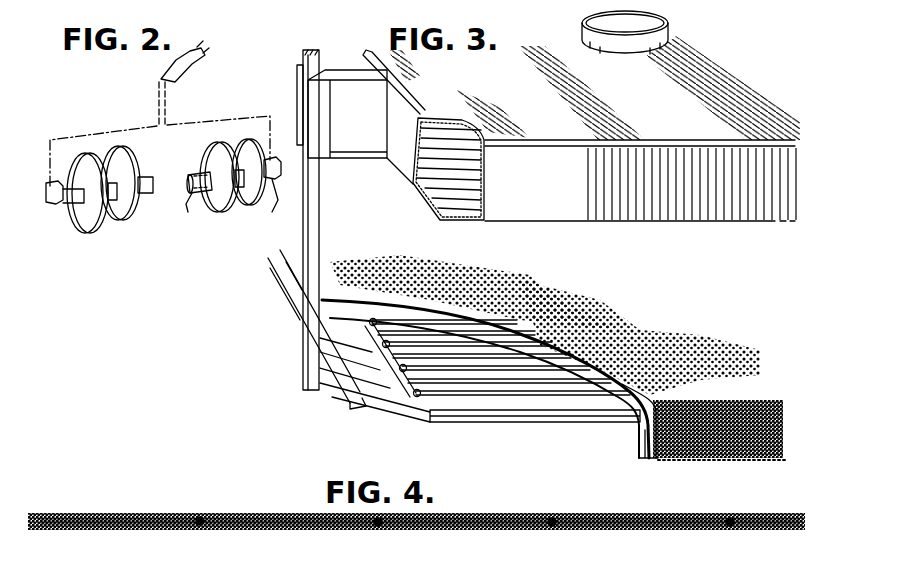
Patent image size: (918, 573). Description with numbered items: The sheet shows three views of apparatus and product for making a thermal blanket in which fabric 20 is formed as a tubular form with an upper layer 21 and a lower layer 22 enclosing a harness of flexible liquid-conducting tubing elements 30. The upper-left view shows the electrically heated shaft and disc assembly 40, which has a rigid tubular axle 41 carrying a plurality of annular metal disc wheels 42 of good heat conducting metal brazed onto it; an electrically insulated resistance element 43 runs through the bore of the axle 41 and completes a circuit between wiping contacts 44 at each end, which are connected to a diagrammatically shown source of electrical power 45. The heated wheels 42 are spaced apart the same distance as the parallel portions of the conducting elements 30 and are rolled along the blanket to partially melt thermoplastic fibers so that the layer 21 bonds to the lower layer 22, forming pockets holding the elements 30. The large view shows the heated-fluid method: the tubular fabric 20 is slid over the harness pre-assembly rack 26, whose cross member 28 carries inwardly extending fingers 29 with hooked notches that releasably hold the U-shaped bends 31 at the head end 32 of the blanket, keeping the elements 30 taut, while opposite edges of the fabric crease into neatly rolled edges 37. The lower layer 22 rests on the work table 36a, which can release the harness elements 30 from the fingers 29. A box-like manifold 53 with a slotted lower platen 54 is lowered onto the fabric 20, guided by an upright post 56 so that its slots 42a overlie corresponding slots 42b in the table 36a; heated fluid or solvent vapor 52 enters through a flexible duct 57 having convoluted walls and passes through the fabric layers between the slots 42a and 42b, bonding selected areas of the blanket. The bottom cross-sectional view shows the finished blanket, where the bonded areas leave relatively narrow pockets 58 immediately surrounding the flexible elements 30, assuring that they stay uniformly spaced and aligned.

In FIG. 3, the fabric 20 is at (687, 316).
In FIG. 4, the fabric 20 is at (130, 505).
In FIG. 3, the upper layer 21 is at (635, 443).
In FIG. 3, the lower layer 22 is at (633, 418).
In FIG. 3, the harness pre-assembly rack 26 is at (343, 420).
In FIG. 3, the cross member 28 is at (292, 288).
In FIG. 3, the fingers 29 is at (398, 372).
In FIG. 3, the flexible liquid-conducting tubing elements 30 is at (405, 318).
In FIG. 4, the flexible liquid-conducting tubing elements 30 is at (203, 515).
In FIG. 3, the U-shaped bends 31 is at (386, 312).
In FIG. 3, the head end 32 is at (330, 298).
In FIG. 3, the work table 36a is at (462, 422).
In FIG. 3, the rolled edges 37 is at (533, 4).
In FIG. 2, the electrically heated shaft and disc assembly 40 is at (129, 244).
In FIG. 2, the rigid tubular axle 41 is at (146, 202).
In FIG. 2, the annular metal disc wheels 42 is at (118, 228).
In FIG. 3, the slots in the manifold 42a is at (470, 191).
In FIG. 3, the slots in the table 42b is at (583, 393).
In FIG. 2, the electrically insulated resistance element 43 is at (191, 196).
In FIG. 2, the wiping contacts 44 is at (55, 208).
In FIG. 2, the source of electrical power 45 is at (192, 62).
In FIG. 3, the heated fluid or solvent vapor 52 is at (622, 26).
In FIG. 3, the manifold 53 is at (662, 187).
In FIG. 3, the slotted lower platen 54 is at (462, 213).
In FIG. 3, the upright post 56 is at (319, 222).
In FIG. 3, the flexible duct 57 is at (670, 37).
In FIG. 4, the pockets 58 is at (370, 531).